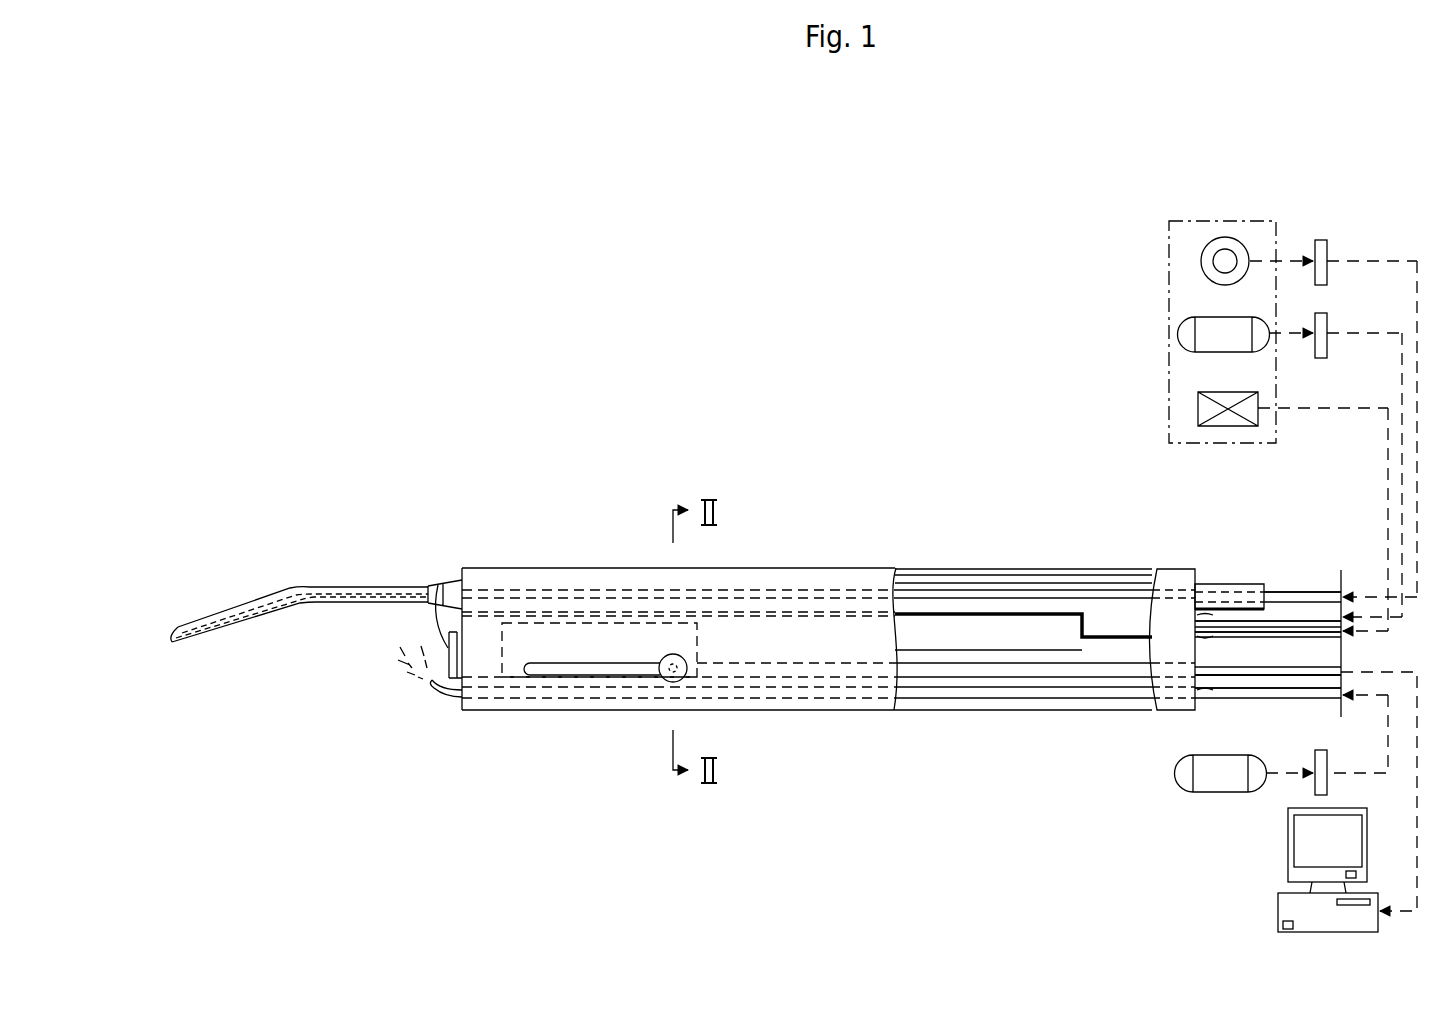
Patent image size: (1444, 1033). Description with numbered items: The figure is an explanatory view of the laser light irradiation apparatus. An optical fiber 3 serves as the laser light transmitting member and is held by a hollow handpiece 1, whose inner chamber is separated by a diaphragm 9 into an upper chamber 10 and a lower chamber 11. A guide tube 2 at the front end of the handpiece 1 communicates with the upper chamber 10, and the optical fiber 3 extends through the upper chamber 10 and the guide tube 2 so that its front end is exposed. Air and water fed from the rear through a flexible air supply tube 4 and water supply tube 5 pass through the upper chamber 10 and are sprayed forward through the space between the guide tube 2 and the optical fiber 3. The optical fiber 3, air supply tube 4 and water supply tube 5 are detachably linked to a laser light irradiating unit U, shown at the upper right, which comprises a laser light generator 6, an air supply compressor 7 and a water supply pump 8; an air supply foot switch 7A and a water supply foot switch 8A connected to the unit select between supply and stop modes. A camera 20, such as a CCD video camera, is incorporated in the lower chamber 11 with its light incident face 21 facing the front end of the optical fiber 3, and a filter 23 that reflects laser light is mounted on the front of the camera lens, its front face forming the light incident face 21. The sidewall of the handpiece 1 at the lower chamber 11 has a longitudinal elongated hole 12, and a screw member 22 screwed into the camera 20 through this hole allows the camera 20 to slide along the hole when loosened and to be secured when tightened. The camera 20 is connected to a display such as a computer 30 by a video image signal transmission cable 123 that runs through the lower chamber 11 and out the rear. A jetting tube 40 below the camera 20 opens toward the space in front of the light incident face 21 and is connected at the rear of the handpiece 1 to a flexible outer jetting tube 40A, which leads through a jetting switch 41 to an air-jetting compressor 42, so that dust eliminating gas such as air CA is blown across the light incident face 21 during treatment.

The handpiece 1 is at (853, 585).
The guide tube 2 is at (247, 608).
The optical fiber 3 is at (1330, 592).
The air supply tube 4 is at (1281, 618).
The water supply tube 5 is at (1306, 630).
The laser light generator 6 is at (1198, 408).
The air supply compressor 7 is at (1180, 333).
The air supply foot switch 7A is at (1328, 327).
The water supply pump 8 is at (1201, 261).
The water supply foot switch 8A is at (1328, 252).
The diaphragm 9 is at (937, 612).
The upper chamber 10 is at (1024, 583).
The lower chamber 11 is at (958, 650).
The elongated hole 12 is at (577, 670).
The camera 20 is at (540, 623).
The light incident face 21 is at (437, 585).
The screw member 22 is at (668, 682).
The filter 23 is at (452, 690).
The computer 30 is at (1278, 903).
The jetting tube 40 is at (432, 692).
The outer jetting tube 40A is at (1231, 690).
The jetting switch 41 is at (1315, 768).
The air-jetting compressor 42 is at (1220, 792).
The video image signal transmission cable 123 is at (1115, 662).
The laser light irradiating unit U is at (1212, 221).
The dust eliminating gas CA is at (403, 676).